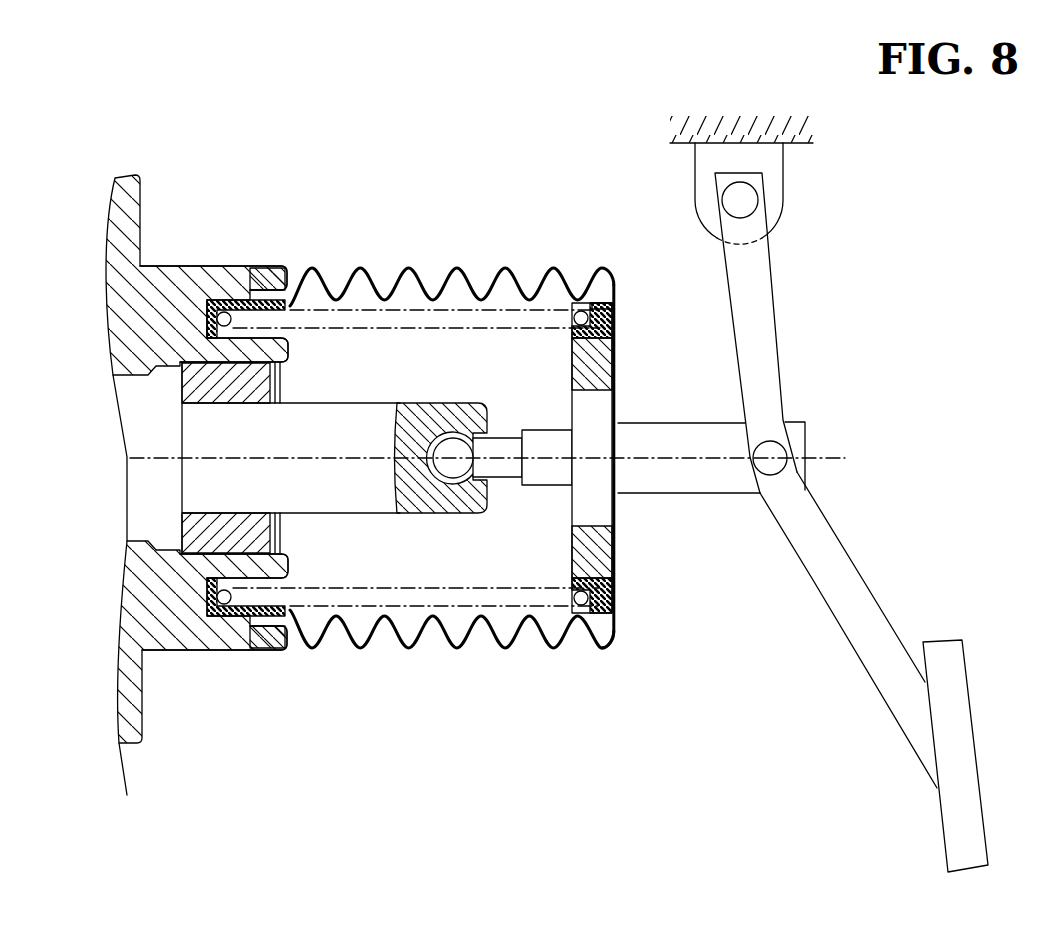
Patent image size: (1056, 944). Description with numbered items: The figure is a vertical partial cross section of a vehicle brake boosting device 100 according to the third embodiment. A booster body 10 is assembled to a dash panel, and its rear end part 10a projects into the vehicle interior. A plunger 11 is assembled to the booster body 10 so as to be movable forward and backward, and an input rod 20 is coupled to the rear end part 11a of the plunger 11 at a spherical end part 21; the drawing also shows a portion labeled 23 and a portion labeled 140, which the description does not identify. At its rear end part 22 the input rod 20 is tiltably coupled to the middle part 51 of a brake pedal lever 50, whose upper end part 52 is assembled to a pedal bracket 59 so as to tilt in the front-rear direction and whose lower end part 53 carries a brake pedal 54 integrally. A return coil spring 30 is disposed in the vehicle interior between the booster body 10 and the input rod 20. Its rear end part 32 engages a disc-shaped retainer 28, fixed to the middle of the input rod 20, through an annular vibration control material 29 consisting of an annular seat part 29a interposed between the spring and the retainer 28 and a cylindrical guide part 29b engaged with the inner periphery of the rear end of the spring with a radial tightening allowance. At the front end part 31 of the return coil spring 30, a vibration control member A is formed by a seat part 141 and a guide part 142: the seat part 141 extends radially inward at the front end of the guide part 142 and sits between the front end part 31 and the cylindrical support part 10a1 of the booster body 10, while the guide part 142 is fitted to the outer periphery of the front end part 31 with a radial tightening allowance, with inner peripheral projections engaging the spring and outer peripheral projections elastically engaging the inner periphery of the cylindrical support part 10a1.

The booster body 10 is at (122, 173).
The rear end part 10a is at (170, 273).
The cylindrical support part 10a1 is at (238, 558).
The plunger 11 is at (140, 493).
The rear end part 11a is at (428, 487).
The spherical end part 21 is at (455, 474).
The rod portion 23 is at (620, 484).
The retainer 28 is at (604, 353).
The annular vibration control material 29 is at (614, 316).
The annular seat part 29a is at (598, 647).
The cylindrical guide part 29b is at (572, 557).
The rear end part 32 is at (582, 301).
The return coil spring 30 is at (510, 300).
The bellows body 140 is at (456, 266).
The guide part 142 is at (265, 292).
The front end part 31 is at (228, 300).
The seat part 141 is at (208, 317).
The vibration control member A is at (210, 297).
The brake boosting device 100 is at (378, 233).
The input rod 20 is at (680, 424).
The rear end part 22 is at (806, 436).
The middle part 51 is at (782, 478).
The pedal bracket 59 is at (688, 144).
The upper end part 52 is at (750, 226).
The brake pedal lever 50 is at (776, 316).
The lower end part 53 is at (917, 733).
The brake pedal 54 is at (965, 772).